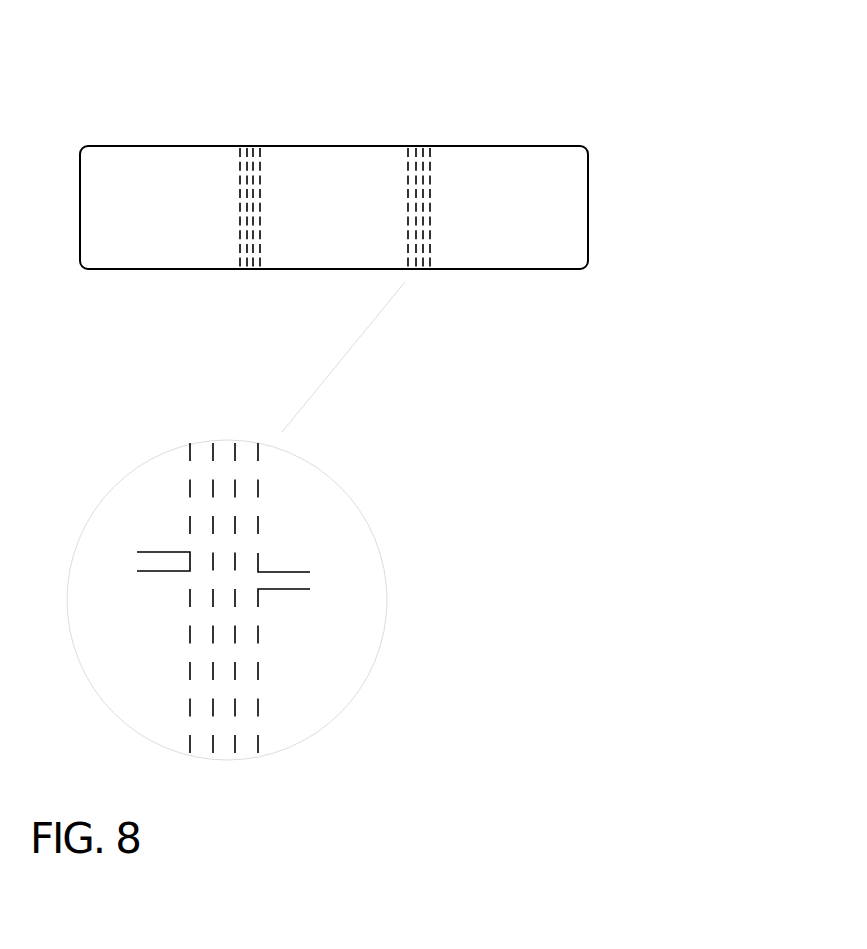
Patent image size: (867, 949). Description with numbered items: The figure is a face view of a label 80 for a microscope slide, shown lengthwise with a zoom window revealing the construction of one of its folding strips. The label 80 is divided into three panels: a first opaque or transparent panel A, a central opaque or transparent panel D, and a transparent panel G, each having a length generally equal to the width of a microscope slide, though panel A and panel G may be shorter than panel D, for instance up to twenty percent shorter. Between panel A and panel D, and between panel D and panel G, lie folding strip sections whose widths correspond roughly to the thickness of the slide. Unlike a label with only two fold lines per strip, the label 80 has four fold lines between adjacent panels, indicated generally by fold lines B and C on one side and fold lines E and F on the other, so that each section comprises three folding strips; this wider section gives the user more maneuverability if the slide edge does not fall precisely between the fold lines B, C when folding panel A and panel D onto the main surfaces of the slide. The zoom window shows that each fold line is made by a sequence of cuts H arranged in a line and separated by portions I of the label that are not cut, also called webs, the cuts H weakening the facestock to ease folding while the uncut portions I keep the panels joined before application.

The label 80 is at (388, 393).
The panel A is at (167, 225).
The fold line B is at (244, 269).
The fold line C is at (252, 269).
The panel D is at (332, 225).
The fold line E is at (416, 269).
The fold line F is at (423, 269).
The panel G is at (502, 225).
The cut H is at (219, 596).
The uncut portion I is at (312, 610).